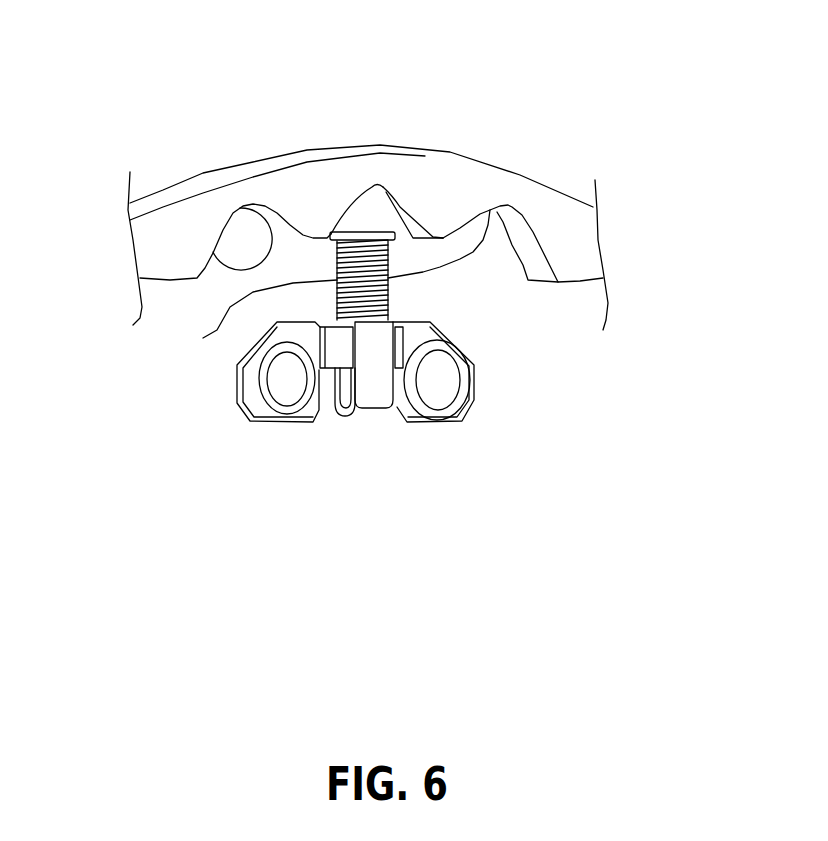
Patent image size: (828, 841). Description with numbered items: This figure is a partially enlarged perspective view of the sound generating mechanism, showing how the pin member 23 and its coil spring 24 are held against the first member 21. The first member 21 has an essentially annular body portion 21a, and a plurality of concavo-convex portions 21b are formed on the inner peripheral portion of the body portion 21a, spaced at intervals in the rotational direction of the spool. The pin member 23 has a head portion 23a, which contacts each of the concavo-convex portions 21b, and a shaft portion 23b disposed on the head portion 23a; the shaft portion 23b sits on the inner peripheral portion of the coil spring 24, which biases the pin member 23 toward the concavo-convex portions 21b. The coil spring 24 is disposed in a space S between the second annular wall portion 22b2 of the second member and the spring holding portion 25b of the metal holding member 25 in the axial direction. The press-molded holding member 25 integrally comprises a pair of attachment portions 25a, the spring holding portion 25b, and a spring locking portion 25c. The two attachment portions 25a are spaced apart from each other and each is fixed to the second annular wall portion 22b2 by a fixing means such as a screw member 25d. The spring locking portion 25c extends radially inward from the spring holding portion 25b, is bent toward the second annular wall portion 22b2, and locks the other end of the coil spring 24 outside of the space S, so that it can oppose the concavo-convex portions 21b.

The first member 21 is at (278, 47).
The body portion 21a is at (198, 206).
The concavo-convex portions 21b is at (268, 205).
The second annular wall portion 22b2 is at (288, 505).
The pin member 23 is at (568, 57).
The head portion 23a is at (378, 208).
The shaft portion 23b is at (489, 210).
The coil spring 24 is at (205, 338).
The holding member 25 is at (391, 452).
The attachment portions 25a is at (240, 420).
The spring holding portion 25b is at (405, 320).
The spring locking portion 25c is at (367, 410).
The screw member 25d is at (552, 415).
The space S is at (333, 408).